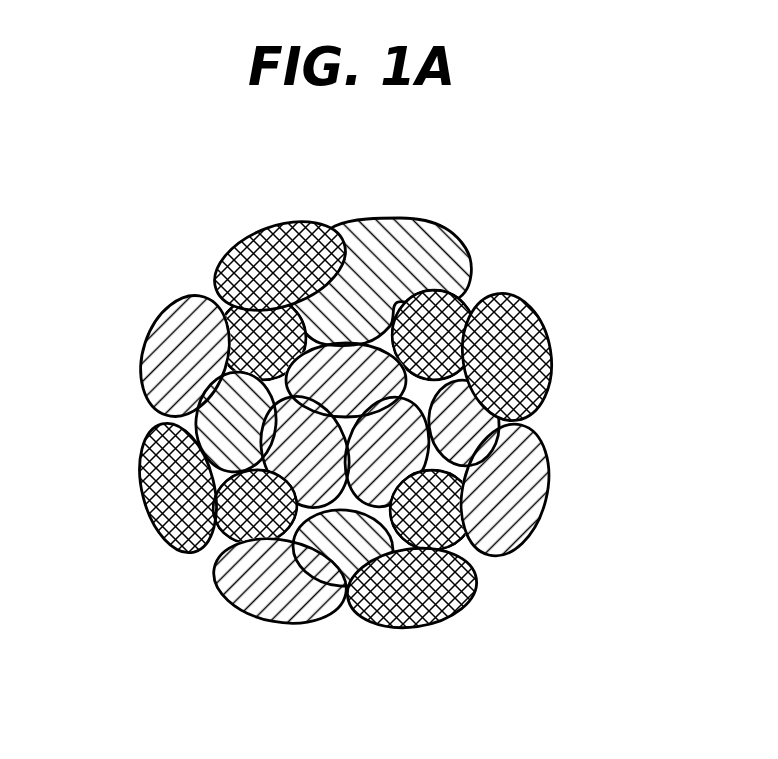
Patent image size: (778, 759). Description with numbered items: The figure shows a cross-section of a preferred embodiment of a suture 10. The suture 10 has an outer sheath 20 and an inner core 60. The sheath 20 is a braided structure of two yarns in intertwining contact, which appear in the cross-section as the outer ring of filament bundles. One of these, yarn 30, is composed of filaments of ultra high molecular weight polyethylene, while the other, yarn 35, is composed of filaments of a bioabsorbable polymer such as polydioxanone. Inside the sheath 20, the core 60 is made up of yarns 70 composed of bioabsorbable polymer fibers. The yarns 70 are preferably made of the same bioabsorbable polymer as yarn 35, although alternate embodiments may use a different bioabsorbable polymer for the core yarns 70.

The suture 10 is at (587, 213).
The outer sheath 20 is at (172, 558).
The yarn 30 is at (267, 220).
The yarn 35 is at (360, 290).
The inner core 60 is at (298, 340).
The yarns 70 is at (368, 352).